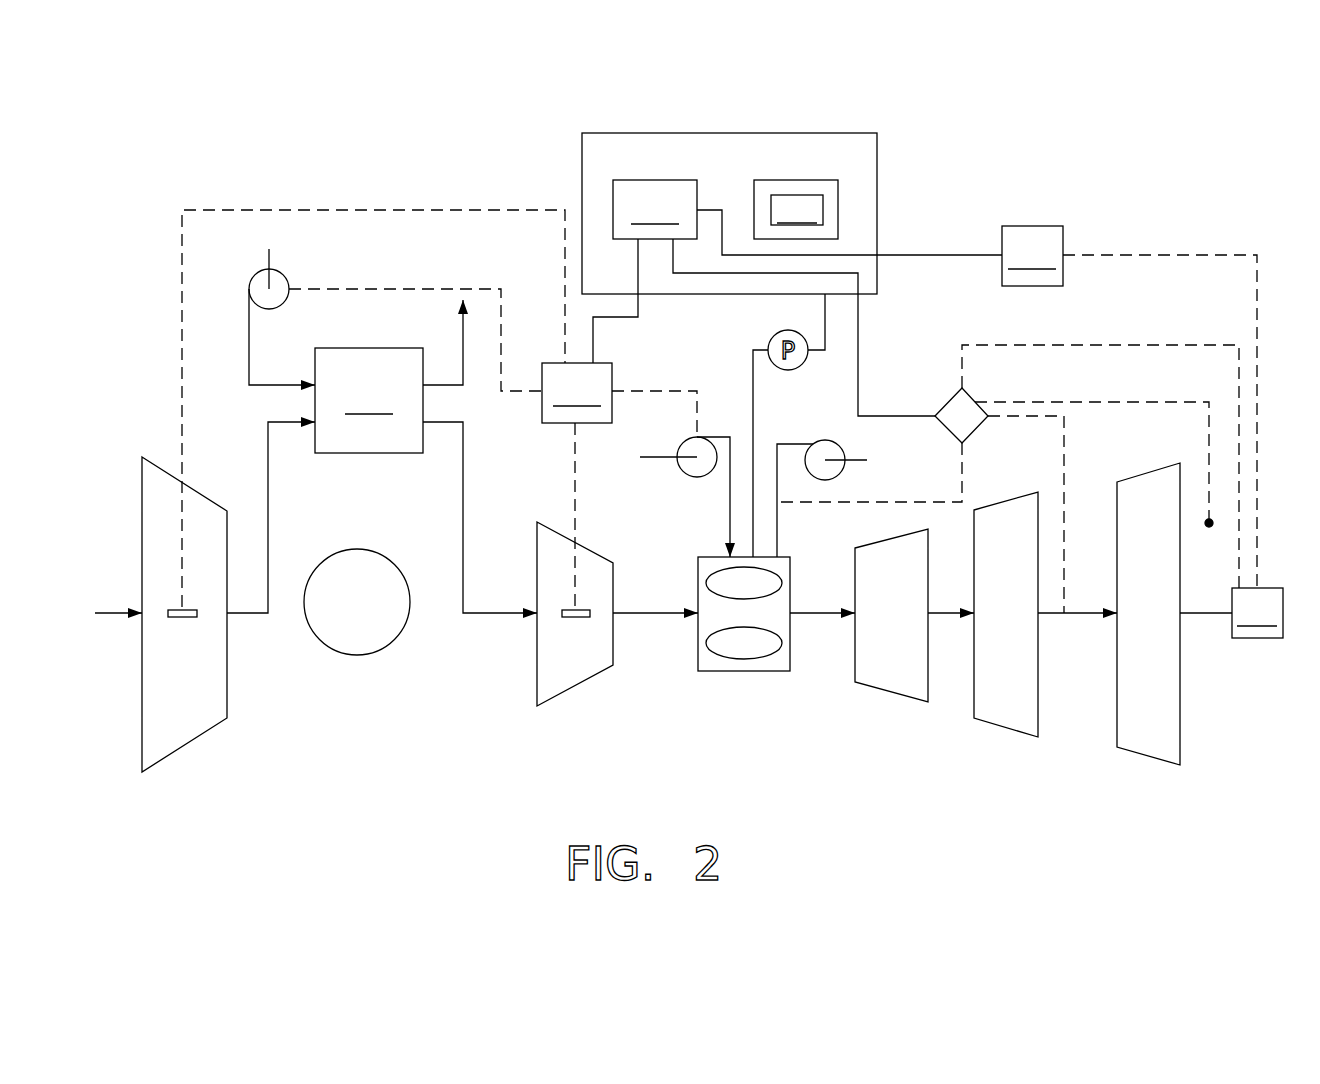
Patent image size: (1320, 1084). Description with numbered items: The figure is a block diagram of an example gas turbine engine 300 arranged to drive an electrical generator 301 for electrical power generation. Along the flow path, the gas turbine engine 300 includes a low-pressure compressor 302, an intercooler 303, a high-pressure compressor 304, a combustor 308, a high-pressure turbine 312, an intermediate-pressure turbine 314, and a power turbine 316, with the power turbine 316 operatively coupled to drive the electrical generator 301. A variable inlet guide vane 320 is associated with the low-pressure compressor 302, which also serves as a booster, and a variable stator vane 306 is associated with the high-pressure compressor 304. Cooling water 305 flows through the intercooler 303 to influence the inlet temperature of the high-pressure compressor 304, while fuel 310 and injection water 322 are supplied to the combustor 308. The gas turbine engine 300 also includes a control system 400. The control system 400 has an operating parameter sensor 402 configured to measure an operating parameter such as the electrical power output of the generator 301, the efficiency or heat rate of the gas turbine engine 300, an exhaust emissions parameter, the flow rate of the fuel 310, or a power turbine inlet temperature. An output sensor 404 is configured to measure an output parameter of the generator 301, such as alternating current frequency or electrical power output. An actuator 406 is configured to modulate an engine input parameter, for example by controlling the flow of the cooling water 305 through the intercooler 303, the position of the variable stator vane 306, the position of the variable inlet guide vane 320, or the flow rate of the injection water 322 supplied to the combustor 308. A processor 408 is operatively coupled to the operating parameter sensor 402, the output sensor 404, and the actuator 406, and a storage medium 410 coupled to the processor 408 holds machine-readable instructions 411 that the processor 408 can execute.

The gas turbine engine 300 is at (1107, 160).
The electrical generator 301 is at (1257, 613).
The low-pressure compressor 302 is at (176, 724).
The intercooler 303 is at (369, 400).
The high-pressure compressor 304 is at (573, 672).
The cooling water 305 is at (463, 350).
The variable stator vane 306 is at (575, 618).
The combustor 308 is at (740, 665).
The fuel 310 is at (777, 530).
The high-pressure turbine 312 is at (900, 680).
The intermediate-pressure turbine 314 is at (1010, 712).
The power turbine 316 is at (1150, 745).
The variable inlet guide vane 320 is at (182, 618).
The injection water 322 is at (730, 500).
The control system 400 is at (900, 163).
The operating parameter sensor 402 is at (942, 403).
The output sensor 404 is at (1032, 256).
The actuator 406 is at (577, 393).
The processor 408 is at (655, 209).
The storage medium 410 is at (795, 180).
The machine-readable instructions 411 is at (797, 210).